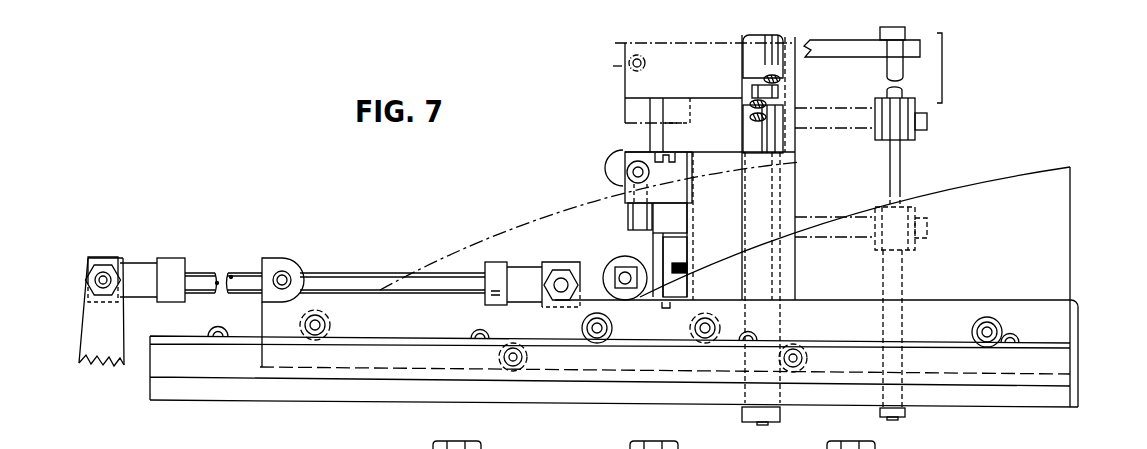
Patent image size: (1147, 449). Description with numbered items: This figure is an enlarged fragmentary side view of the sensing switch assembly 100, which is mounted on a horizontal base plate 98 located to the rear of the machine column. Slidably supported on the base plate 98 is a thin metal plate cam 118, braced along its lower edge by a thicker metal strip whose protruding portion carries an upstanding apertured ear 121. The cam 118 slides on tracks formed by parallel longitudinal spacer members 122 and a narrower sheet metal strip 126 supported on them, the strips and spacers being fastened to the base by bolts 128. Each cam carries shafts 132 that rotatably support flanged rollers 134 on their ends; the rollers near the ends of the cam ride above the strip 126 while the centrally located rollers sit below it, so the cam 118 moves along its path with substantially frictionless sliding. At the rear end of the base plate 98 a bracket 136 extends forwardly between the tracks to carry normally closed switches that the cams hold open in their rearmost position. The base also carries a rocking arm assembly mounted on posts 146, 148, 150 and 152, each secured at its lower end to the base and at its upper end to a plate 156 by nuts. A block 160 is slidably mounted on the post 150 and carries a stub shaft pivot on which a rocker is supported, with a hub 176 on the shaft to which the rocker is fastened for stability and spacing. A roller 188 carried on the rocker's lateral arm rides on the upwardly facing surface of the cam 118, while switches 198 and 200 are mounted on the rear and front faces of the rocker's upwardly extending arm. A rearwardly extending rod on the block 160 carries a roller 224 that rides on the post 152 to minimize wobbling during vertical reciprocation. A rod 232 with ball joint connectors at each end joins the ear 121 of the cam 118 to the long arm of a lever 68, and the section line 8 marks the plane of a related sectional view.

The section line 8- 8 is at (583, 180).
The lever 68 is at (82, 322).
The base plate 98 is at (263, 391).
The sensing switch assembly 100 is at (1012, 119).
The cam member 118 is at (1074, 222).
The apertured ear 121 is at (541, 263).
The spacer member 122 is at (363, 375).
The sheet metal strip 126 is at (385, 334).
The bolt 128 is at (1013, 339).
The shaft 132 is at (780, 357).
The flanged roller 134 is at (808, 358).
The bracket 136 is at (1078, 337).
The post 146 is at (752, 107).
The post 148 is at (748, 130).
The post 150 is at (753, 148).
The post 152 is at (903, 158).
The plate 156 is at (836, 52).
The block 160 is at (788, 192).
The hub 176 is at (668, 247).
The roller 188 is at (622, 256).
The switch 198 is at (673, 216).
The switch 200 is at (628, 205).
The roller 224 is at (907, 244).
The rod 232 is at (239, 276).